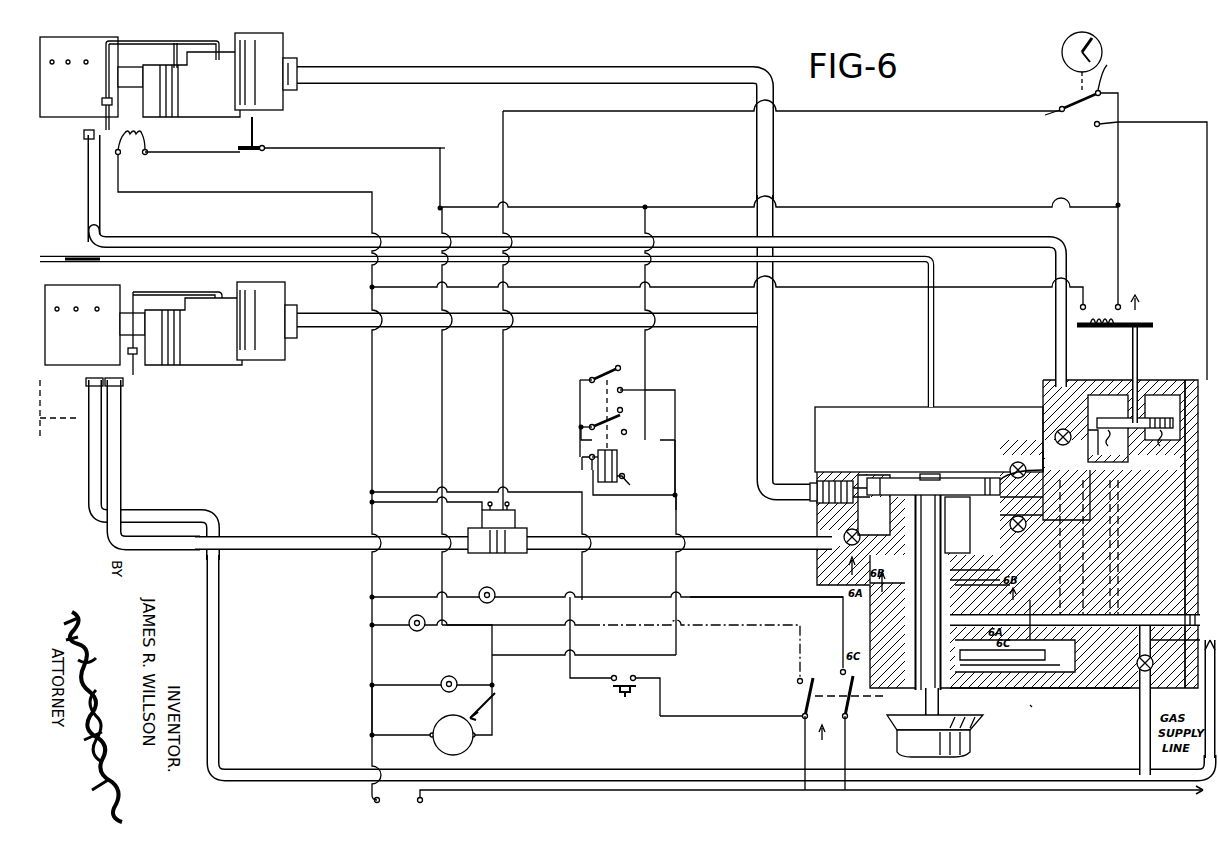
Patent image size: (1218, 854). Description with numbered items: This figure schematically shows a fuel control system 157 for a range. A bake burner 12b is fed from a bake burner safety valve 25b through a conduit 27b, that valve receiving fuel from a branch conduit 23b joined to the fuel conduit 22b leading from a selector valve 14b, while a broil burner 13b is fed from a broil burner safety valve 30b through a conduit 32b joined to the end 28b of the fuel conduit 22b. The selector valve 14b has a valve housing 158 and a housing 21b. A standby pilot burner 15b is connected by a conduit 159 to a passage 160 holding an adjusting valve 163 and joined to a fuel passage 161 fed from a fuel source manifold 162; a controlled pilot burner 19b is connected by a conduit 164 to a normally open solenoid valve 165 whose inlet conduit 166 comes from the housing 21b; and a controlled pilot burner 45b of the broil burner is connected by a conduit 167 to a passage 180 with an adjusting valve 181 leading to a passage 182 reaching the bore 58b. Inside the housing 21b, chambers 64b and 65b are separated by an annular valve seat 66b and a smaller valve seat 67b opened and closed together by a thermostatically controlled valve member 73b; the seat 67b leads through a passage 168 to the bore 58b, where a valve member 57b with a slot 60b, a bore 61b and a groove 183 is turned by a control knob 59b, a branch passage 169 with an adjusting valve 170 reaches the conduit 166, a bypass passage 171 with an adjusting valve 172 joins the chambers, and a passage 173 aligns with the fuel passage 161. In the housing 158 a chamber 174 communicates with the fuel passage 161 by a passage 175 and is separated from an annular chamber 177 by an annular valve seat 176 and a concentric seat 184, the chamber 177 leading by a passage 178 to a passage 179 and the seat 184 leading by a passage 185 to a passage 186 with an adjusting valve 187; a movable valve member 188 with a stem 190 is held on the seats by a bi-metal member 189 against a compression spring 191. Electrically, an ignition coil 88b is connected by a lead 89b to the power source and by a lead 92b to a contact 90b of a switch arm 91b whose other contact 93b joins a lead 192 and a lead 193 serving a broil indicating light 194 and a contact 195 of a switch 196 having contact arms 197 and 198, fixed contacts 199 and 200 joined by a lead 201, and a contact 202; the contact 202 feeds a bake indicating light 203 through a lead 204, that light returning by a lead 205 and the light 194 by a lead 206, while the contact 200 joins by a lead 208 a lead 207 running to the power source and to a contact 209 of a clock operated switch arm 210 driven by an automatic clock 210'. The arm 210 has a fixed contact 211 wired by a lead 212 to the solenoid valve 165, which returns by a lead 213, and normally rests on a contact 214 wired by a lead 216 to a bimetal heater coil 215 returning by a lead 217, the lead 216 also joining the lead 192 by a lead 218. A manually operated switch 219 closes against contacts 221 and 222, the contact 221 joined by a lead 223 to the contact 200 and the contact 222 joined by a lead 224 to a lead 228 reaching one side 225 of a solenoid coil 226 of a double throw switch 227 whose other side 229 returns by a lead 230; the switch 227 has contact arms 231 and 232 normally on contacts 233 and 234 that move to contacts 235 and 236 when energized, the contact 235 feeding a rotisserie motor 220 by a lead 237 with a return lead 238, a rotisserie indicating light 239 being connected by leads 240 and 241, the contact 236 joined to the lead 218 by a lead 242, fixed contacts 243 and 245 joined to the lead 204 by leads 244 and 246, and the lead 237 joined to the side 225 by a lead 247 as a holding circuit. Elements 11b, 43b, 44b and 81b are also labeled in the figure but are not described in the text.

The oven cavity (dashed) 11b is at (42, 438).
The burner control housing 12b is at (90, 300).
The burner control housing 13b is at (68, 112).
The gas control valve assembly 14b is at (1036, 715).
The gas conduit 15b is at (88, 388).
The gas conduit 19b is at (121, 400).
The valve port 21b is at (990, 680).
The drive pipe 22b is at (772, 345).
The motor shaft 23b is at (318, 330).
The motor 25b is at (235, 291).
The capillary tube 27b is at (136, 300).
The motor shaft 28b is at (312, 84).
The motor 30b is at (310, 53).
The coupling 32b is at (128, 67).
The capillary tube 43b is at (104, 100).
The capillary tube 44b is at (176, 68).
The conduit 45b is at (88, 150).
The valve disc 57b is at (983, 586).
The valve stem 58b is at (912, 575).
The control knob 59b is at (972, 735).
The valve seat 60b is at (1015, 633).
The valve member 61b is at (980, 569).
The plunger 64b is at (972, 540).
The control housing 65b is at (985, 462).
The lever 66b is at (1000, 480).
The bar 67b is at (888, 478).
The pivot 73b is at (930, 474).
The shaft 81b is at (80, 258).
The thermostat switch 88b is at (132, 160).
The lead wire 89b is at (305, 190).
The contact bar 90b is at (244, 150).
The contact 91b is at (263, 146).
The lead wire 92b is at (192, 153).
The lead wire 93b is at (285, 147).
The control system 157 is at (987, 58).
The gas supply pipe 158 is at (1205, 665).
The gas pipe 159 is at (222, 638).
The inlet passage 160 is at (1152, 642).
The gas passage 161 is at (1132, 620).
The valve 162 is at (1168, 665).
The gas passage 163 is at (1135, 670).
The gas pipe 164 is at (262, 536).
The coupling 165 is at (530, 528).
The gas pipe 166 is at (725, 538).
The gas pipe 167 is at (220, 245).
The knurled rod 168 is at (834, 526).
The valve 169 is at (868, 526).
The rod 170 is at (843, 543).
The passage 171 is at (1031, 494).
The valve 172 is at (1030, 532).
The passage 173 is at (1034, 618).
The valve body 174 is at (1150, 395).
The valve body wall 175 is at (1182, 512).
The chamber 176 is at (1108, 428).
The chamber 177 is at (1120, 470).
The passage 178 is at (1110, 555).
The valve body bottom 179 is at (1030, 688).
The passage 180 is at (1062, 490).
The valve 181 is at (1058, 428).
The valve disc 182 is at (985, 685).
The passage 183 is at (890, 595).
The passage 184 is at (1105, 393).
The passage 185 is at (1131, 547).
The valve 186 is at (1016, 460).
The passage 187 is at (1040, 445).
The spring 188 is at (1135, 395).
The armature bar 189 is at (1153, 325).
The plunger rod 190 is at (1138, 347).
The diaphragm 191 is at (1139, 417).
The lead wire 192 is at (400, 148).
The lead wire 193 is at (489, 627).
The lead wire 194 is at (426, 627).
The contact 195 is at (797, 680).
The lead wire 196 is at (825, 753).
The switch link 197 is at (850, 685).
The switch blade 198 is at (803, 712).
The switch blade 199 is at (850, 713).
The contact 200 is at (803, 720).
The contact 201 is at (843, 720).
The contact 202 is at (840, 671).
The indicator lamp 203 is at (494, 589).
The lead wire 204 is at (608, 596).
The lead wire 205 is at (420, 596).
The indicator lamp 206 is at (392, 624).
The lead wire 207 is at (688, 790).
The lead wire 208 is at (800, 748).
The contact 209 is at (1095, 126).
The timer switch 210 is at (1069, 94).
The timer clock 210' is at (1100, 53).
The contact 211 is at (1045, 116).
The lead wire 212 is at (897, 111).
The lead wire 213 is at (393, 512).
The lead wire 214 is at (1120, 70).
The solenoid coil 215 is at (1101, 304).
The lead wire 216 is at (1122, 250).
The lead wire 217 is at (990, 283).
The lead wire 218 is at (895, 205).
The thermostat switch 219 is at (622, 697).
The rotisserie motor 220 is at (470, 740).
The contact 221 is at (638, 677).
The lead wire 222 is at (614, 675).
The lead wire 223 is at (695, 716).
The lead wire 224 is at (570, 625).
The contact 225 is at (590, 460).
The relay 226 is at (620, 460).
The switch assembly 227 is at (678, 368).
The lead wire 228 is at (580, 458).
The contact 229 is at (643, 484).
The lead wire 230 is at (462, 492).
The switch blade 231 is at (605, 367).
The switch blade 232 is at (615, 425).
The contact 233 is at (619, 364).
The contact 234 is at (624, 410).
The contact 235 is at (623, 390).
The contact 236 is at (628, 432).
The lead wire 237 is at (677, 478).
The lead wire 238 is at (400, 733).
The indicator lamp 239 is at (443, 682).
The lead wire 240 is at (433, 677).
The lead wire 241 is at (415, 685).
The switch link 242 is at (645, 355).
The lead wire 243 is at (588, 378).
The lead wire 244 is at (588, 525).
The lead wire 245 is at (588, 434).
The junction 246 is at (580, 426).
The lead wire 247 is at (676, 498).